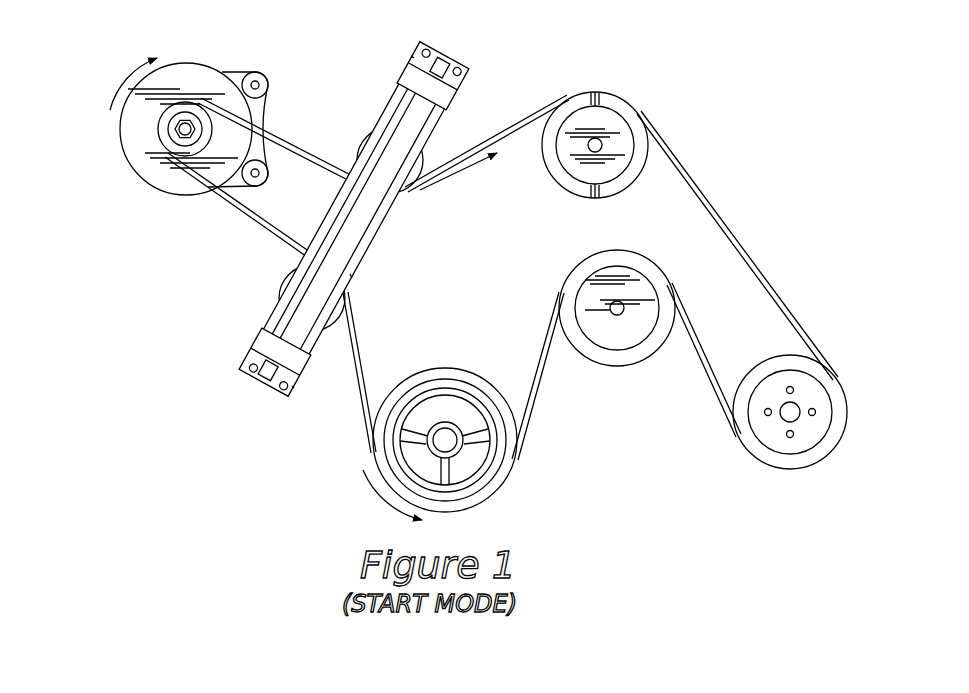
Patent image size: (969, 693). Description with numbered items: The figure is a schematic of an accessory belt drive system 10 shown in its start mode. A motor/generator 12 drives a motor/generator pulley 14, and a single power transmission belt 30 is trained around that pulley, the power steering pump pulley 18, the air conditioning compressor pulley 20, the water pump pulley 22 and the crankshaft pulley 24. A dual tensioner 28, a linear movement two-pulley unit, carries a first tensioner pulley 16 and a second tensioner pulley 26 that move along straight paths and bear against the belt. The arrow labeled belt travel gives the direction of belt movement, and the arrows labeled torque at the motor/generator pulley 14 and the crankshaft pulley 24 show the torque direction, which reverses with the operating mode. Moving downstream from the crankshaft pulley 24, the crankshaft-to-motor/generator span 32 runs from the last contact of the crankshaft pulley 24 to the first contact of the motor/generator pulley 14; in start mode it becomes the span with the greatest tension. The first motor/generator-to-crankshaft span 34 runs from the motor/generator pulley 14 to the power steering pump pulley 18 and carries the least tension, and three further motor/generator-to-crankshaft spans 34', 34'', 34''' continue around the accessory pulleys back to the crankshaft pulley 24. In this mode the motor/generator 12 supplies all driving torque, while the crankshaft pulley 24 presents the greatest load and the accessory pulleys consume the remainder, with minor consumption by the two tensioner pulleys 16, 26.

The accessory belt drive system 10 is at (746, 145).
The motor/generator 12 is at (120, 130).
The motor/generator pulley 14 is at (163, 143).
The first tensioner pulley 16 is at (281, 290).
The power steering pump pulley 18 is at (617, 93).
The air conditioning compressor pulley 20 is at (806, 469).
The water pump pulley 22 is at (645, 363).
The crankshaft pulley 24 is at (483, 380).
The second tensioner pulley 26 is at (360, 145).
The dual tensioner 28 is at (406, 235).
The power transmission belt 30 is at (722, 407).
The crankshaft-to-motor/generator span 32 is at (243, 490).
The first motor/generator-to-crankshaft span 34 is at (458, 248).
The motor/generator-to-crankshaft span 34' is at (737, 241).
The motor/generator-to-crankshaft span 34'' is at (723, 342).
The motor/generator-to-crankshaft span 34''' is at (558, 381).